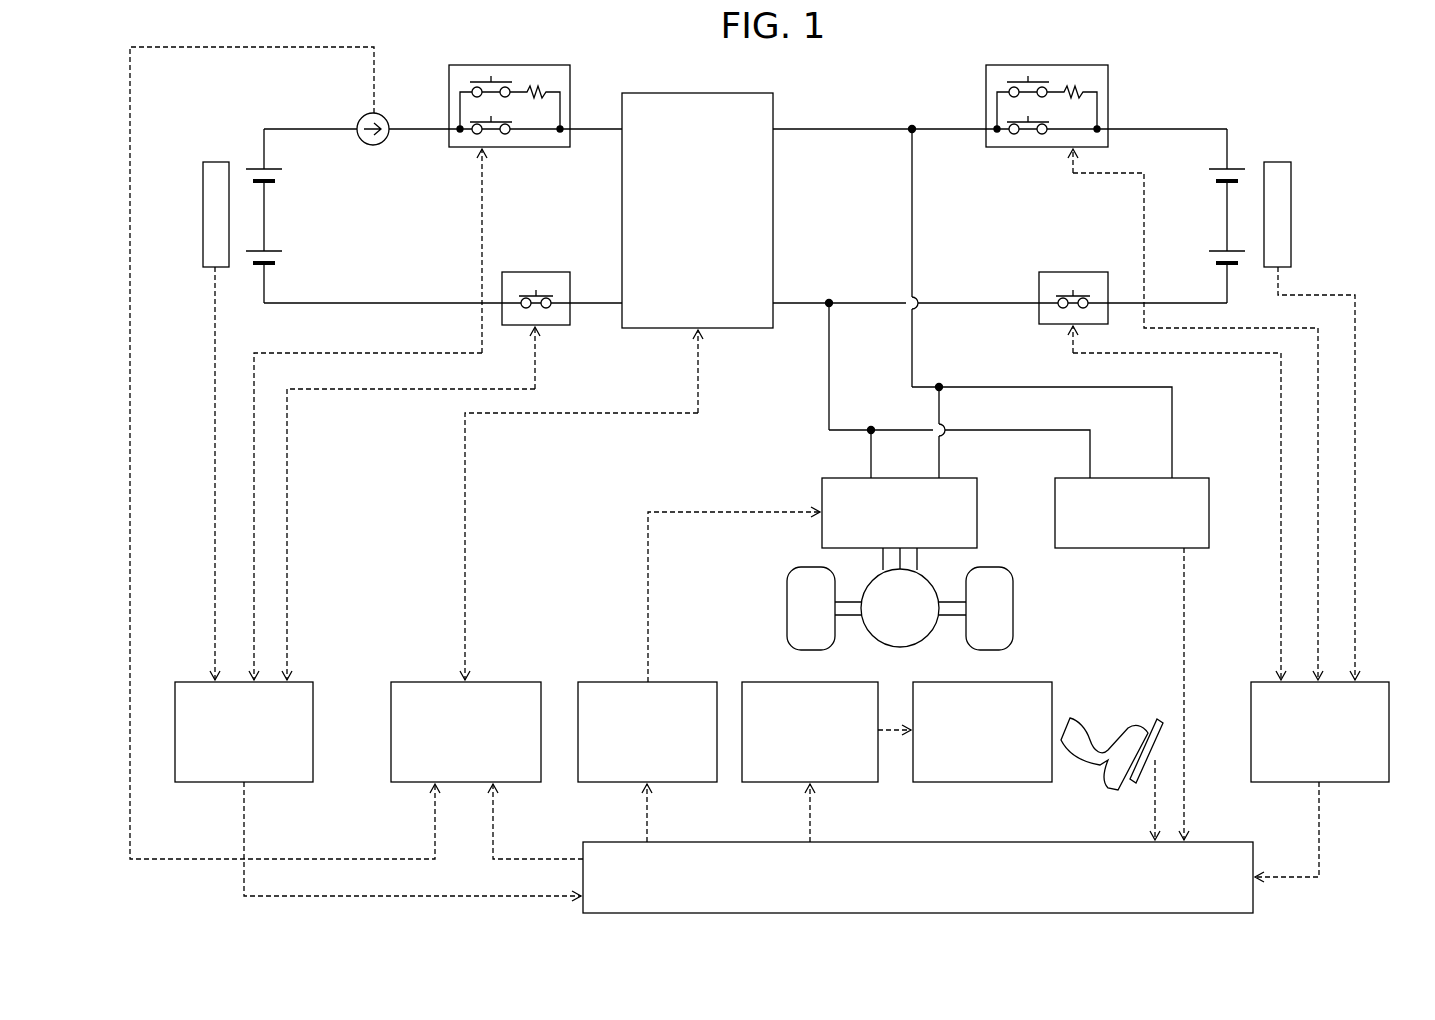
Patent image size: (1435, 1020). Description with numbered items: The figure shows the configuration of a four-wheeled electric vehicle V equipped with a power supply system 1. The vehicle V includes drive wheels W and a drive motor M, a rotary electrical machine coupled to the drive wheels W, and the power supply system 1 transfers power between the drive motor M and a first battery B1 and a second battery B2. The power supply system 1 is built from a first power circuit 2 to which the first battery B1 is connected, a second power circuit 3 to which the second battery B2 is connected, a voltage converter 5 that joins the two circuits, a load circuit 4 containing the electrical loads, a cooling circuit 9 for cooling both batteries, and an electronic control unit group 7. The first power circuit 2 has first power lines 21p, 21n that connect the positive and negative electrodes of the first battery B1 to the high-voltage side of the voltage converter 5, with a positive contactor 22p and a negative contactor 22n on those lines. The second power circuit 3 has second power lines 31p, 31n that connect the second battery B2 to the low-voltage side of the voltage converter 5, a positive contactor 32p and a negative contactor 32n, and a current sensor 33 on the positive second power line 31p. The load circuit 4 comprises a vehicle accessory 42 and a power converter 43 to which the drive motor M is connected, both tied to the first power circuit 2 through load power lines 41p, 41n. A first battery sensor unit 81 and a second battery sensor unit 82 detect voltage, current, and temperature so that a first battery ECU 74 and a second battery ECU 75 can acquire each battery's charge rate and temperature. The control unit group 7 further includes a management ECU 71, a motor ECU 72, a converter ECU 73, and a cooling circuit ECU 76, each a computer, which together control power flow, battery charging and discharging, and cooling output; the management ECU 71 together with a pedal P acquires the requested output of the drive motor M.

The power supply system 1 is at (1382, 240).
The first power circuit 2 is at (1234, 98).
The second power circuit 3 is at (200, 118).
The load circuit 4 is at (803, 416).
The voltage converter 5 is at (736, 96).
The electronic control unit group 7 is at (1386, 612).
The cooling circuit 9 is at (1034, 684).
The first power line 21p is at (812, 128).
The first power line 21n is at (794, 302).
The positive contactor 22p is at (1110, 90).
The negative contactor 22n is at (1052, 272).
The second power line 31p is at (316, 128).
The second power line 31n is at (318, 302).
The positive contactor 32p is at (576, 70).
The negative contactor 32n is at (548, 272).
The current sensor 33 is at (383, 112).
The load power line 41p is at (994, 386).
The load power line 41n is at (1006, 432).
The vehicle accessory 42 is at (1190, 480).
The power converter 43 is at (838, 484).
The management ECU 71 is at (1253, 896).
The motor ECU 72 is at (600, 684).
The converter ECU 73 is at (509, 684).
The first battery ECU 74 is at (1367, 684).
The second battery ECU 75 is at (302, 684).
The cooling circuit ECU 76 is at (737, 684).
The first battery sensor unit 81 is at (1286, 162).
The second battery sensor unit 82 is at (224, 162).
The first battery B1 is at (1244, 168).
The second battery B2 is at (280, 182).
The drive motor M is at (930, 624).
The pedal P is at (1160, 716).
The drive wheels W is at (996, 567).
The vehicle V is at (1337, 86).